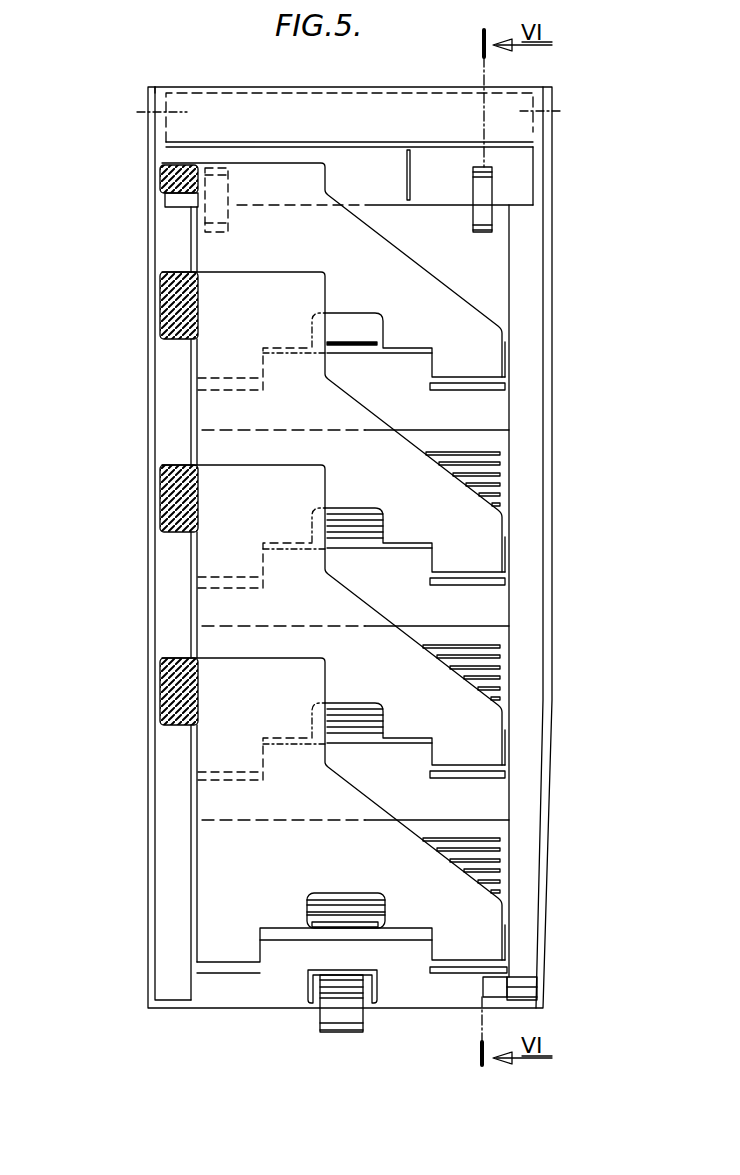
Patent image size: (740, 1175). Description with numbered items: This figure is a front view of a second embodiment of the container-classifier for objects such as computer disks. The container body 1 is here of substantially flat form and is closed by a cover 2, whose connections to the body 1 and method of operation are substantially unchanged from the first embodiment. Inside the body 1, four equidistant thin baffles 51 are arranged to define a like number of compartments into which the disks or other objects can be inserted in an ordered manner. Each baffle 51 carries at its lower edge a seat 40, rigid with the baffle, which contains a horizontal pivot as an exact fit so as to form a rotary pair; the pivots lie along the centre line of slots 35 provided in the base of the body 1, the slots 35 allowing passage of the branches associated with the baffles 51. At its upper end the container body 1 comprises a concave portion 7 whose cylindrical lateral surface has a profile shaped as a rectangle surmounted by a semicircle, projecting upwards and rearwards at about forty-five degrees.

The concave portion 7 is at (148, 103).
The container body 1 is at (551, 237).
The baffle 51 is at (240, 163).
The slot 35 is at (460, 380).
The seat 40 is at (207, 947).
The cover 2 is at (288, 979).